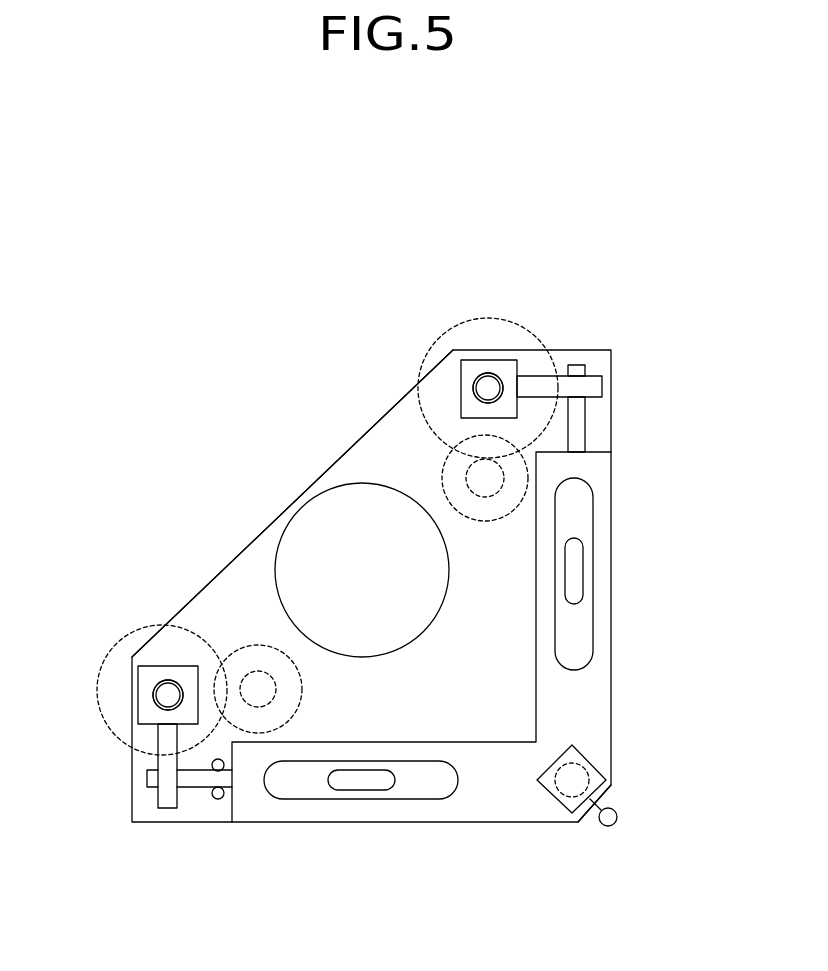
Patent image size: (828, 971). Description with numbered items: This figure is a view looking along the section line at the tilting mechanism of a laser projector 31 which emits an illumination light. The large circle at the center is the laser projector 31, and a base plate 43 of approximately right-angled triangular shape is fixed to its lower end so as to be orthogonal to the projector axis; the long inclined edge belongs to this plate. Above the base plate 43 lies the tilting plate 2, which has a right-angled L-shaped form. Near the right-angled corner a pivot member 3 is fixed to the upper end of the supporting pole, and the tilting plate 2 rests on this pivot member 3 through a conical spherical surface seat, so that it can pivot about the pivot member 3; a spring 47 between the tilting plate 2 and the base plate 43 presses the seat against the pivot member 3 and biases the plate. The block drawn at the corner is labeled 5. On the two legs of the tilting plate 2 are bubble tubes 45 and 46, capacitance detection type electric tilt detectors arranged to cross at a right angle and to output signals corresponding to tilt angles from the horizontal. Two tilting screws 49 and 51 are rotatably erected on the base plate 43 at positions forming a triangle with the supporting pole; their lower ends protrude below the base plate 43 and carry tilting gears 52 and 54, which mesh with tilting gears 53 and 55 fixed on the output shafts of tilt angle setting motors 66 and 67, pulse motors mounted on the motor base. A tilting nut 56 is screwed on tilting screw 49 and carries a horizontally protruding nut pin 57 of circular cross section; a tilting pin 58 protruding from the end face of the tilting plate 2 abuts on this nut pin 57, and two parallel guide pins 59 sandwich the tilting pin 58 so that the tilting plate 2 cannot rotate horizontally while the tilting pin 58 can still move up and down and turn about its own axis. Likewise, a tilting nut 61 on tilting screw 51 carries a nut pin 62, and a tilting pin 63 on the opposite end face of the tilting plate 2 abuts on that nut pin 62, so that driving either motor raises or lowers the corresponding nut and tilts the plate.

The tilting plate 2 is at (611, 670).
The pivot member 3 is at (558, 802).
The mounting block 5 is at (587, 762).
The laser projector 31 is at (425, 640).
The base plate 43 is at (337, 460).
The bubble tube 45 is at (455, 795).
The bubble tube 46 is at (593, 630).
The spring 47 is at (617, 817).
The tilting screw 49 is at (167, 680).
The tilting screw 51 is at (480, 372).
The tilting gear 52 is at (113, 653).
The tilting gear 53 is at (245, 662).
The tilting gear 54 is at (503, 360).
The tilting gear 55 is at (440, 465).
The tilting nut 56 is at (138, 712).
The nut pin 57 is at (157, 800).
The tilting pin 58 is at (190, 789).
The guide pins 59 is at (218, 800).
The tilting nut 61 is at (505, 360).
The nut pin 62 is at (603, 385).
The tilting pin 63 is at (585, 420).
The tilt angle setting motor 66 is at (248, 668).
The tilt angle setting motor 67 is at (466, 470).